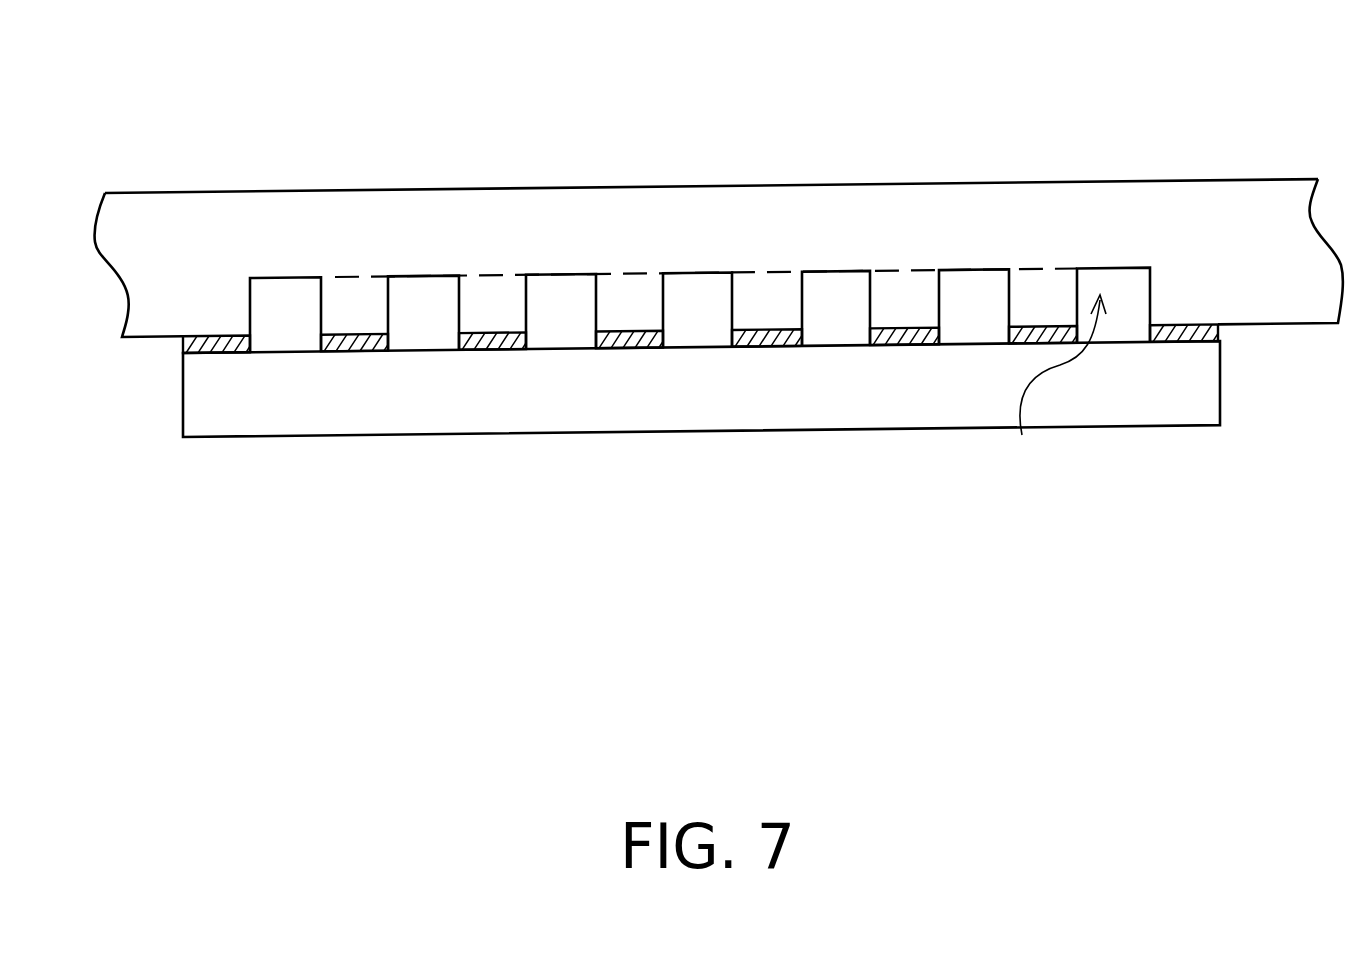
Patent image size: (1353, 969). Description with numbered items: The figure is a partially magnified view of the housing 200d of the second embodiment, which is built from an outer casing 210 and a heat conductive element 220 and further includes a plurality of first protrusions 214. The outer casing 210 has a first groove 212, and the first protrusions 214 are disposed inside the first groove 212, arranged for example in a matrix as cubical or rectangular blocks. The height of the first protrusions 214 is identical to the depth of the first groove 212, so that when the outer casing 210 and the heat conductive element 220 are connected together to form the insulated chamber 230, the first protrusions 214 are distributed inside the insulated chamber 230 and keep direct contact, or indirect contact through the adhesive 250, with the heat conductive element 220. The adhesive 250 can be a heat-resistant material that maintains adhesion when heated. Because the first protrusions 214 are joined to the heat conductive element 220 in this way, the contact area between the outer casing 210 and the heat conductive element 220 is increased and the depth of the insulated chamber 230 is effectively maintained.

The housing 200d is at (1272, 77).
The outer casing 210 is at (1138, 218).
The first groove 212 is at (1143, 299).
The first protrusions 214 is at (1042, 283).
The heat conductive element 220 is at (1208, 365).
The insulated chamber 230 is at (1047, 392).
The adhesive 250 is at (220, 336).